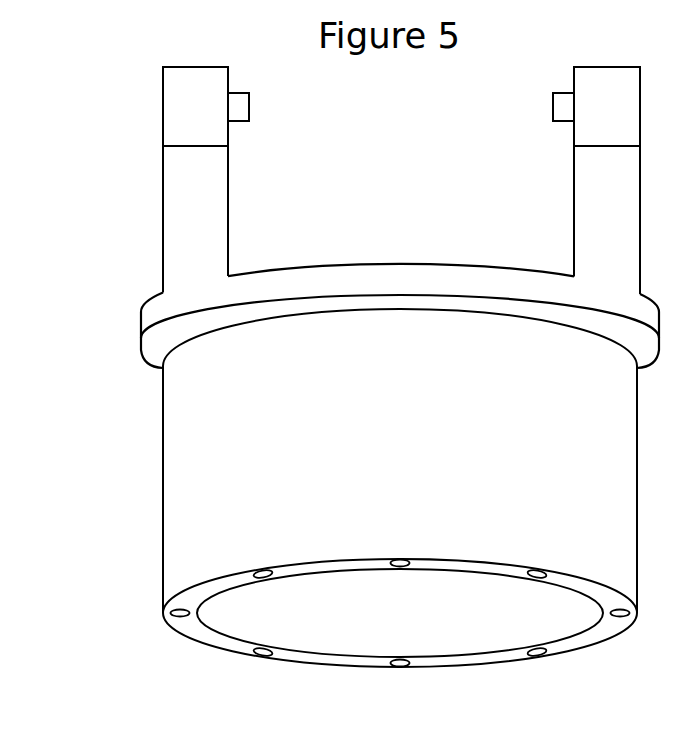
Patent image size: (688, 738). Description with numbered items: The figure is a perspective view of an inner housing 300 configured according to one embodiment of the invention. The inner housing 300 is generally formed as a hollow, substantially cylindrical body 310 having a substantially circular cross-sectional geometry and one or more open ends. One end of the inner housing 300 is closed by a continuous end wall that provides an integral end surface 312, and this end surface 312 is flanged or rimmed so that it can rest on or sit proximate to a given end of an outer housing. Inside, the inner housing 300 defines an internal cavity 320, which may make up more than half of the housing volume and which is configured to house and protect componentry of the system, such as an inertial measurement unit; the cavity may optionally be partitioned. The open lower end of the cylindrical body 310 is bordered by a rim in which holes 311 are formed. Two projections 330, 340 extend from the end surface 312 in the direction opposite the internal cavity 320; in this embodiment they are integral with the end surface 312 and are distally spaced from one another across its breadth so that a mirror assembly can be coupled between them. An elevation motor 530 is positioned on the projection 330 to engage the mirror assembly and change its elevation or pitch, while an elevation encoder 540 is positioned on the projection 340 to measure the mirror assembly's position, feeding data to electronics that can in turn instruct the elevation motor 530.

The inner housing 300 is at (95, 436).
The cylindrical body 310 is at (412, 453).
The mounting holes 311 is at (543, 665).
The end surface 312 is at (132, 327).
The internal cavity 320 is at (312, 624).
The projection 330 is at (173, 225).
The projection 340 is at (628, 225).
The elevation motor 530 is at (213, 118).
The elevation encoder 540 is at (628, 118).